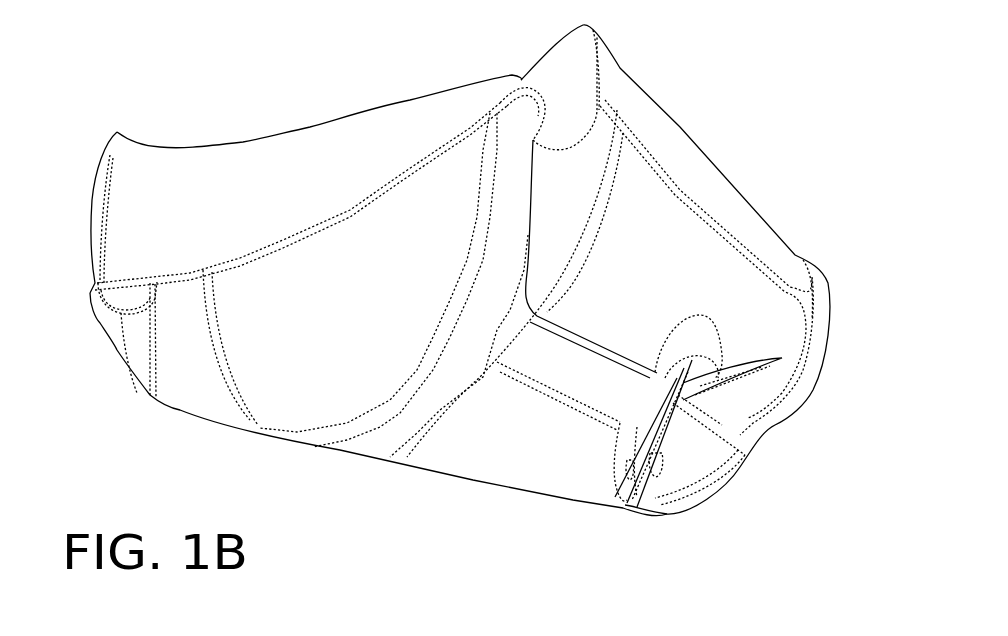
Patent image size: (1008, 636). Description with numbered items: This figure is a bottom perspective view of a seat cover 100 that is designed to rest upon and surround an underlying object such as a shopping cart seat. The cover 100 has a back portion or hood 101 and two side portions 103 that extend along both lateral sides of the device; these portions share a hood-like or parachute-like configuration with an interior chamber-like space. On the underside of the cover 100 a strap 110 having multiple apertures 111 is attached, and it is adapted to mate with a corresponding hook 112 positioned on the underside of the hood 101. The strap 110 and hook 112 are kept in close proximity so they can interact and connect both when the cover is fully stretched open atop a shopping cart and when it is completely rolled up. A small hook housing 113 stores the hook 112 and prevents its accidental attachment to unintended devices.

The seat cover 100 is at (84, 127).
The hood 101 is at (718, 202).
The side portions 103 is at (263, 168).
The strap 110 is at (620, 487).
The apertures 111 is at (650, 470).
The hook 112 is at (685, 403).
The hook housing 113 is at (678, 337).